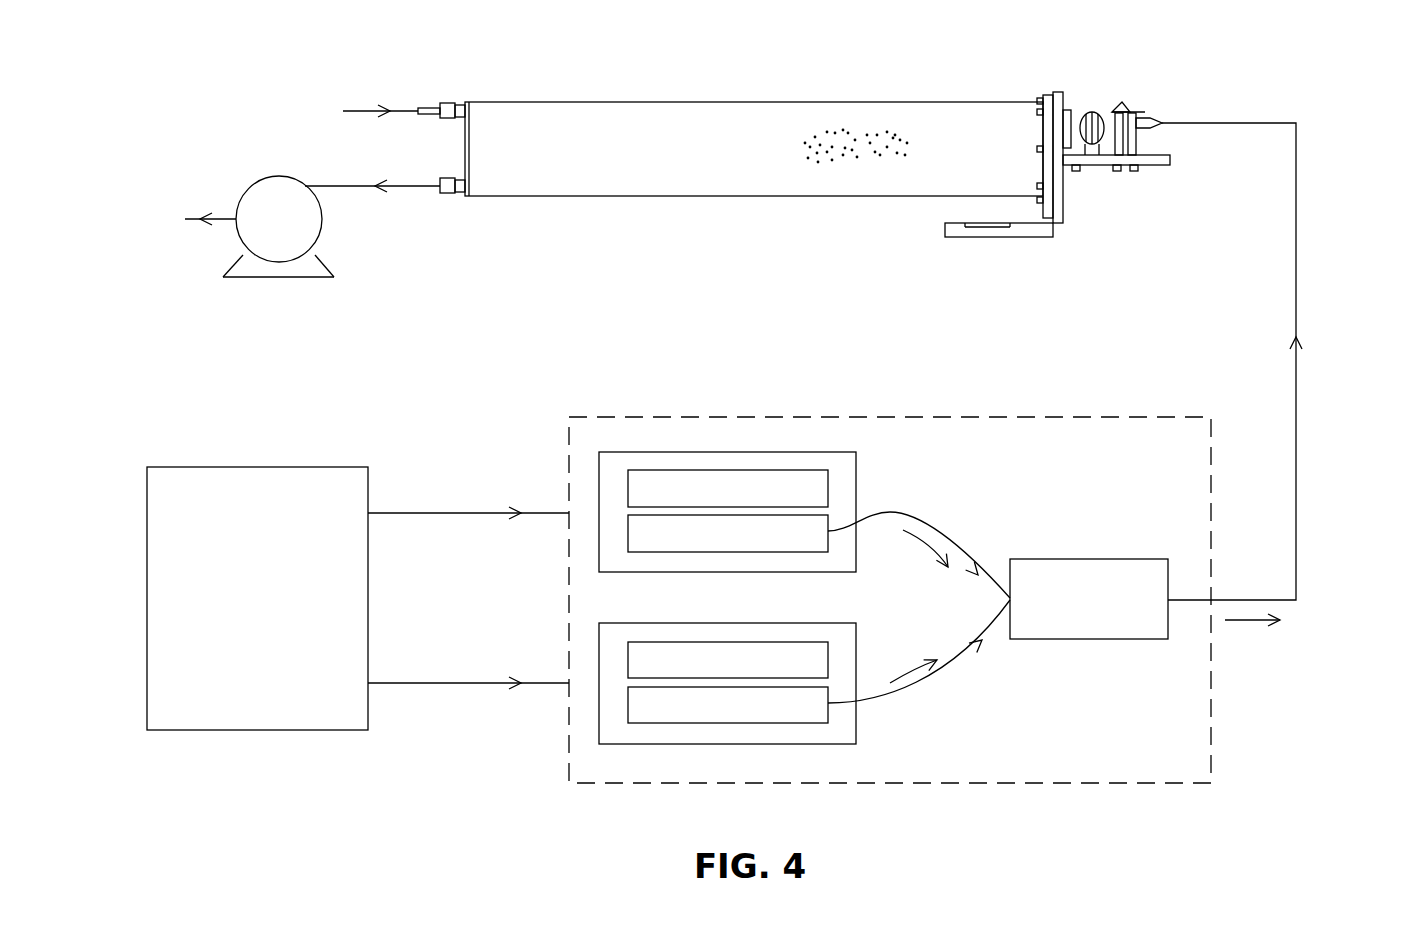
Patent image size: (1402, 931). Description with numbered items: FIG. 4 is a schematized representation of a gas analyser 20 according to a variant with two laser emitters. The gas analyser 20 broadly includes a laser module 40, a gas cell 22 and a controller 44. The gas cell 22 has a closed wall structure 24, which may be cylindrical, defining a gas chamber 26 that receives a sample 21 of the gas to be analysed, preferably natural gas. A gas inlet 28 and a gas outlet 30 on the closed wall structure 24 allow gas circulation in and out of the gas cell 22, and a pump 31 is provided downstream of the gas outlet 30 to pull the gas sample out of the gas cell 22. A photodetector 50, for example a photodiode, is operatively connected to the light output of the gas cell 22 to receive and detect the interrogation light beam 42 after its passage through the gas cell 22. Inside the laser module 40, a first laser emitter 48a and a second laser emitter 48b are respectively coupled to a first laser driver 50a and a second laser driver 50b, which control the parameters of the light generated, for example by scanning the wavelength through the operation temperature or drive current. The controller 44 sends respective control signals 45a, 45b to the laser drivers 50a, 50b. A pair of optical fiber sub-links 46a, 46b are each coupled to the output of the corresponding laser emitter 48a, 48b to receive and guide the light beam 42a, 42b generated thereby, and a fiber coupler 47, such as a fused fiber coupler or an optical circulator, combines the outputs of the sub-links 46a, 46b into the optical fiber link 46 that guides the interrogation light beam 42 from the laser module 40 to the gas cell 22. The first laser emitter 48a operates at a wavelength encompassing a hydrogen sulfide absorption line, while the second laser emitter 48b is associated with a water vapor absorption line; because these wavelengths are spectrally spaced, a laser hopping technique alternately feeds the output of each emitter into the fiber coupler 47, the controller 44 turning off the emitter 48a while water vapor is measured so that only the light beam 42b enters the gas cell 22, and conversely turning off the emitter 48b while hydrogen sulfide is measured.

The gas analyser 20 is at (1360, 113).
The sample 21 is at (867, 145).
The gas cell 22 is at (863, 80).
The closed wall structure 24 is at (748, 101).
The gas chamber 26 is at (579, 161).
The gas inlet 28 is at (445, 102).
The gas outlet 30 is at (446, 194).
The pump 31 is at (277, 277).
The laser module 40 is at (1110, 790).
The interrogation light beam 42 is at (1245, 622).
The light beam 42a is at (918, 541).
The light beam 42b is at (903, 675).
The controller 44 is at (305, 467).
The control signal 45a is at (463, 513).
The control signal 45b is at (463, 683).
The optical fiber link 46 is at (1297, 503).
The optical fiber sub-link 46a is at (958, 550).
The optical fiber sub-link 46b is at (884, 705).
The fiber coupler 47 is at (1085, 559).
The first laser emitter 48a is at (757, 552).
The second laser emitter 48b is at (768, 723).
The photodetector 50 is at (1085, 112).
The first laser driver 50a is at (656, 470).
The second laser driver 50b is at (666, 642).